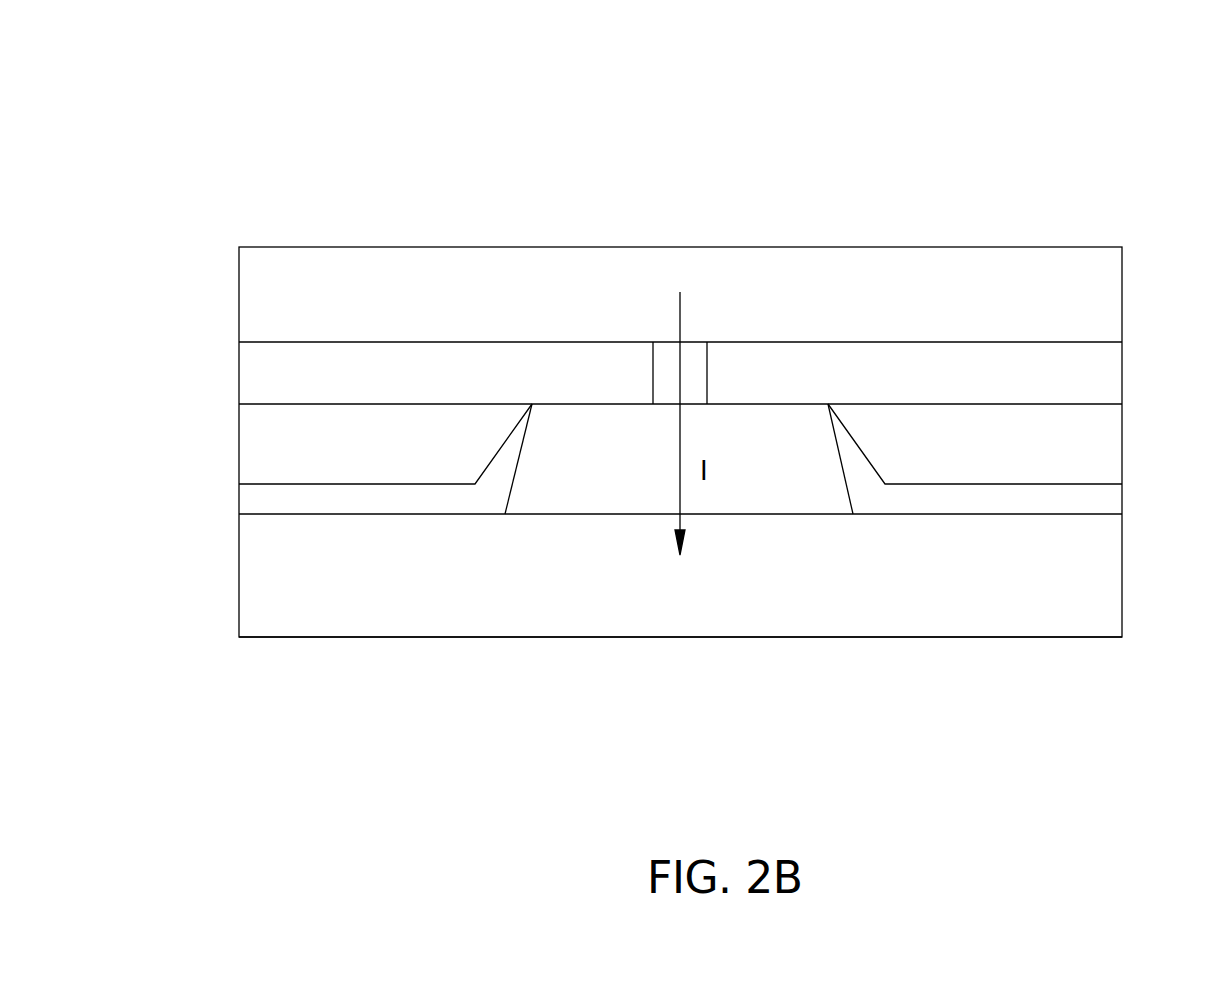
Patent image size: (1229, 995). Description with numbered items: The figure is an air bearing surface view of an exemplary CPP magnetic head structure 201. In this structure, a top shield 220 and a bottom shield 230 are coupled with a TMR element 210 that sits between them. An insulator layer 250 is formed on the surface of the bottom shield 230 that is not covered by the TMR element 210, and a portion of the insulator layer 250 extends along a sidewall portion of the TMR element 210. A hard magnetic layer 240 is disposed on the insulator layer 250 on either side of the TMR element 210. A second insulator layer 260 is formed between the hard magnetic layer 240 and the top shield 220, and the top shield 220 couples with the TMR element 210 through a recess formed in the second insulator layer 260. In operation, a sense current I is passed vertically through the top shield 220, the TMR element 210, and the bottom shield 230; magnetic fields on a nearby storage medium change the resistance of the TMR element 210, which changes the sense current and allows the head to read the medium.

The CPP magnetic head structure 201 is at (257, 105).
The TMR element 210 is at (653, 477).
The top shield 220 is at (773, 302).
The bottom shield 230 is at (658, 605).
The hard magnetic layer 240 is at (415, 463).
The insulator layer 250 is at (256, 498).
The second insulator layer 260 is at (437, 390).